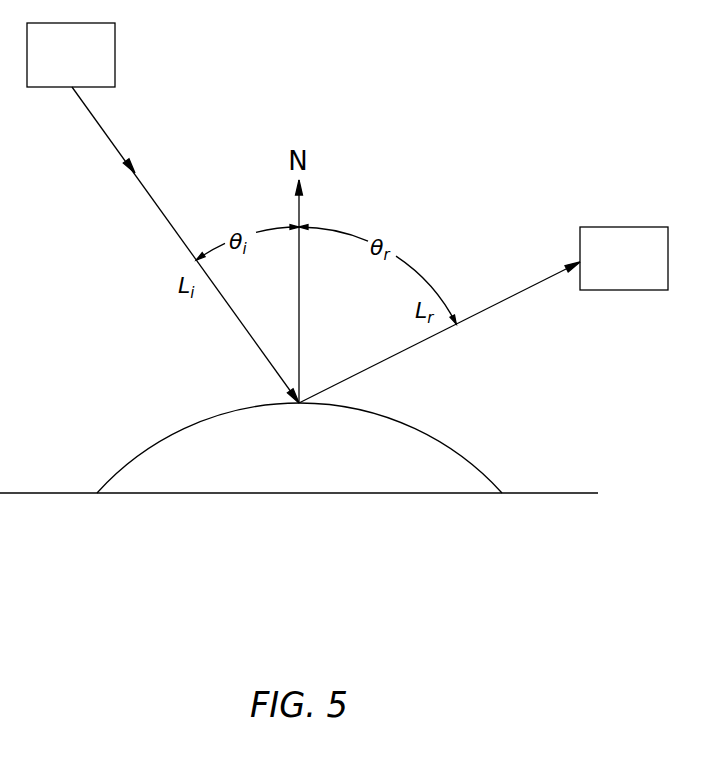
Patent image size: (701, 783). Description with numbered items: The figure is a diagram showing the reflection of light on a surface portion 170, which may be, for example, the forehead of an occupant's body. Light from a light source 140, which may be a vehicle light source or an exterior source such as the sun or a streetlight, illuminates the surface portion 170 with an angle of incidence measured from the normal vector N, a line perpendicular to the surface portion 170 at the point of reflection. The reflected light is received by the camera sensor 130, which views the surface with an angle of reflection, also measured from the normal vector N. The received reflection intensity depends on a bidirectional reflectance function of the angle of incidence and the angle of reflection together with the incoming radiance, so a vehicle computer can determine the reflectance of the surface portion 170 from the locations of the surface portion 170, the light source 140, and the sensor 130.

The light source 140 is at (50, 66).
The camera sensor 130 is at (606, 271).
The surface portion 170 is at (280, 462).